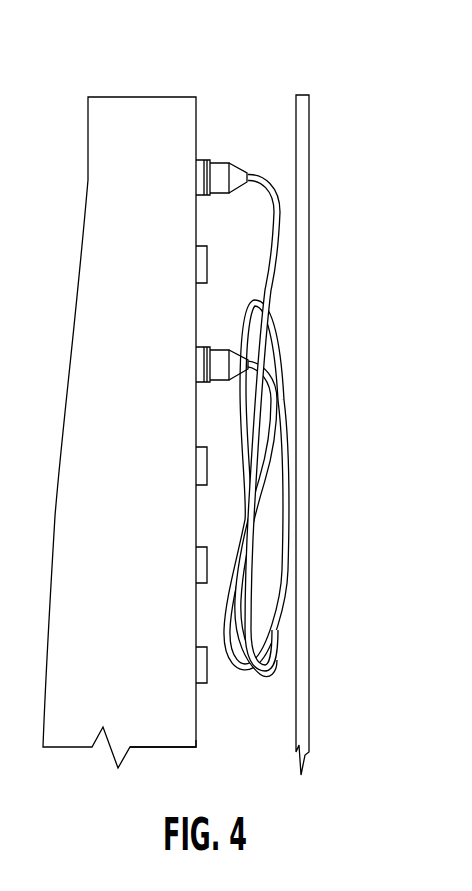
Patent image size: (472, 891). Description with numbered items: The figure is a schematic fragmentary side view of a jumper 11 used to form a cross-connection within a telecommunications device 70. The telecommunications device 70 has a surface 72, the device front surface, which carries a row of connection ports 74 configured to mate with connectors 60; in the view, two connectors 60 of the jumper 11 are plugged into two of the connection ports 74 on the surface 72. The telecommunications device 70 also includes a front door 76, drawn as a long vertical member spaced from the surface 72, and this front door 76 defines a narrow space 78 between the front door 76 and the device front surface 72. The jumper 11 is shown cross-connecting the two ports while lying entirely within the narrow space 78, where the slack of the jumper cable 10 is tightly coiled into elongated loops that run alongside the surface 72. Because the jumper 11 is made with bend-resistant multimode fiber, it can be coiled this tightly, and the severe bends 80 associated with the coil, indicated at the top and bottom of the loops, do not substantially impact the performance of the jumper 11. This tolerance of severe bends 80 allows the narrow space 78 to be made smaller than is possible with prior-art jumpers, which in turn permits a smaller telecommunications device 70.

The cable 10 is at (276, 245).
The jumper 11 is at (277, 465).
The connectors 60 is at (236, 163).
The telecommunications device 70 is at (130, 72).
The surface 72 is at (196, 720).
The connection ports 74 is at (207, 265).
The front door 76 is at (309, 140).
The narrow space 78 is at (272, 125).
The severe bends 80 is at (282, 316).